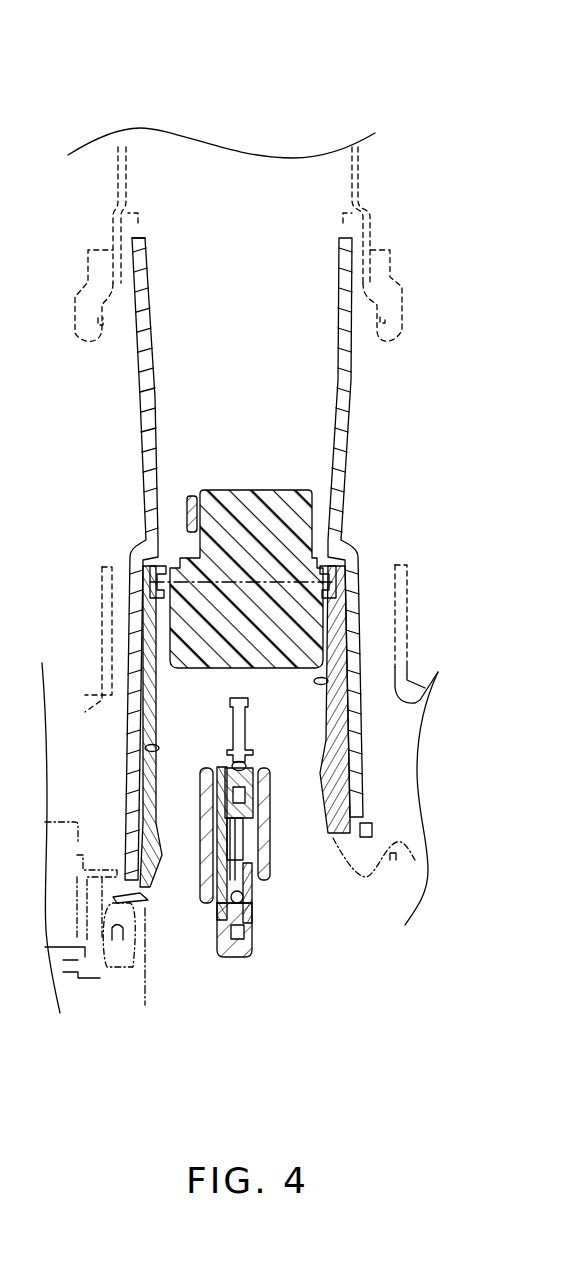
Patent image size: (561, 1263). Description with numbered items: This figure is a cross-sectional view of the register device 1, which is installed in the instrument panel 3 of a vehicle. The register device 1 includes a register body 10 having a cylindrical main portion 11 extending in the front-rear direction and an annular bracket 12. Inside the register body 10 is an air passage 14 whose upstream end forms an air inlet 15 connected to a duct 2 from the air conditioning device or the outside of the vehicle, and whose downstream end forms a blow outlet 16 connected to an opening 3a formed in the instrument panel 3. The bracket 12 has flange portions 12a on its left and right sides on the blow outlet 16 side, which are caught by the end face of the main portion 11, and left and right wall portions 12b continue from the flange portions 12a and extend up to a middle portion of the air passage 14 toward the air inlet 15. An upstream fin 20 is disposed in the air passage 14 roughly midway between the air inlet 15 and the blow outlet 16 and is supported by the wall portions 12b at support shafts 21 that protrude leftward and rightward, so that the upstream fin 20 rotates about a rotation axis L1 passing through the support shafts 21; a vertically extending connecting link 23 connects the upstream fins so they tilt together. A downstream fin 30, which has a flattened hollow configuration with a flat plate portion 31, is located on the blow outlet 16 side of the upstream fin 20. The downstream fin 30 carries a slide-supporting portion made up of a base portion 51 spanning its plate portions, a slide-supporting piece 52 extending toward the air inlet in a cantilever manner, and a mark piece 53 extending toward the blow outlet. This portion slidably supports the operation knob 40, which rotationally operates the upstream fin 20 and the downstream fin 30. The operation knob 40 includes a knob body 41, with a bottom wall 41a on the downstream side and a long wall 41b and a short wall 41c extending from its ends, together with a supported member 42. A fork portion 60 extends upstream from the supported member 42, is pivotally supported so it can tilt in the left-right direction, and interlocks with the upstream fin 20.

The register device 1 is at (391, 152).
The duct 2 is at (380, 263).
The instrument panel 3 is at (120, 973).
The opening 3a is at (153, 967).
The register body 10 is at (383, 459).
The main portion 11 is at (349, 385).
The bracket 12 is at (331, 841).
The flange portion 12a is at (118, 902).
The wall portion 12b is at (158, 747).
The air passage 14 is at (281, 333).
The air inlet 15 is at (142, 237).
The blow outlet 16 is at (163, 893).
The upstream fin 20 is at (258, 501).
The support shaft 21 is at (146, 577).
The connecting link 23 is at (192, 495).
The rotation axis L1 is at (253, 578).
The downstream fin 30 is at (274, 871).
The flat plate portion 31 is at (269, 851).
The operation knob 40 is at (242, 964).
The knob body 41 is at (248, 927).
The bottom wall 41a is at (217, 912).
The long wall 41b is at (222, 768).
The short wall 41c is at (251, 892).
The supported member 42 is at (263, 759).
The base portion 51 is at (238, 830).
The slide-supporting piece 52 is at (225, 798).
The mark piece 53 is at (240, 847).
The fork portion 60 is at (236, 705).